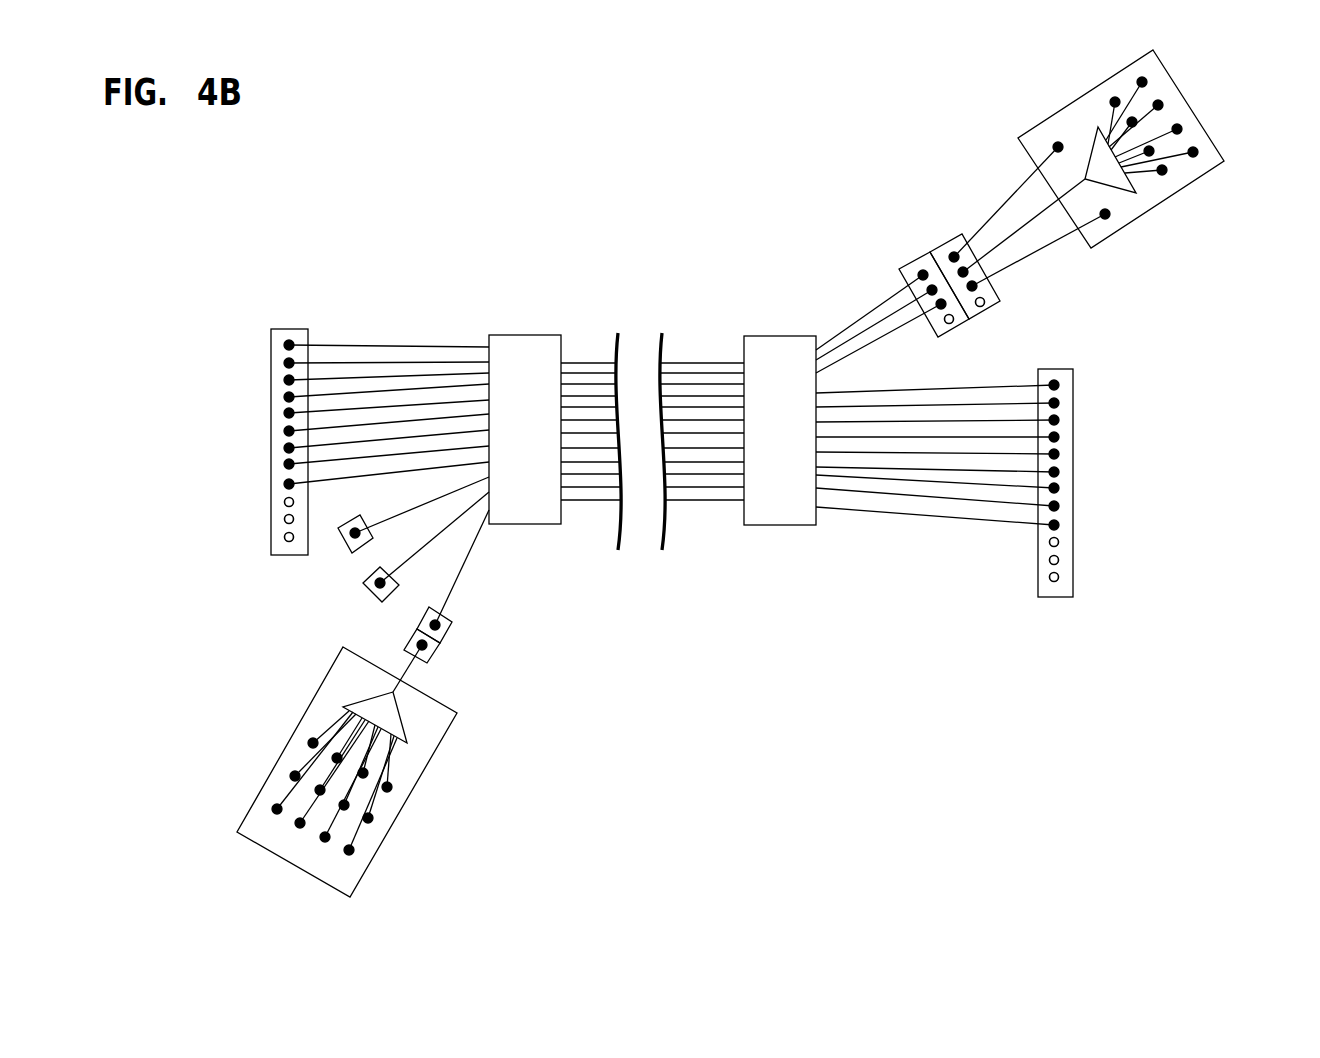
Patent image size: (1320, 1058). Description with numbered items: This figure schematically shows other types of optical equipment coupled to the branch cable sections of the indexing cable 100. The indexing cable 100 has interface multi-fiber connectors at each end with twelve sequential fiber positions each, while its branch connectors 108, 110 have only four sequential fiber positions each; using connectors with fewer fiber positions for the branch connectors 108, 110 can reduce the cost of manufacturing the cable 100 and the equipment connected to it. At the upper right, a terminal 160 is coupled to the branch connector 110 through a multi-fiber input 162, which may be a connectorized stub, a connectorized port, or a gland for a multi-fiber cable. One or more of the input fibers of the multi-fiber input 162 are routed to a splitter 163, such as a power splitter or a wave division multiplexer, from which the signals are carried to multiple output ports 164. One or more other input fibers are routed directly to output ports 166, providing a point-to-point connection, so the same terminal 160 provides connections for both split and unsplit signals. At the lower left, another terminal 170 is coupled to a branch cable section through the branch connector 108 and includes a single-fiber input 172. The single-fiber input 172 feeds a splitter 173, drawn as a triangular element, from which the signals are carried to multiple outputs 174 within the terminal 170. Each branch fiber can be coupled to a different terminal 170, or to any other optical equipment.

The indexing cable 100 is at (583, 292).
The branch connector 108 is at (555, 630).
The branch connector 110 is at (913, 258).
The terminal 160 is at (1143, 206).
The multi-fiber input 162 is at (941, 242).
The splitter 163 is at (1107, 166).
The output ports 164 is at (1162, 170).
The output ports 166 is at (1105, 214).
The terminal 170 is at (398, 774).
The single-fiber input 172 is at (433, 652).
The optical splitter 173 is at (382, 713).
The outputs 174 is at (349, 850).